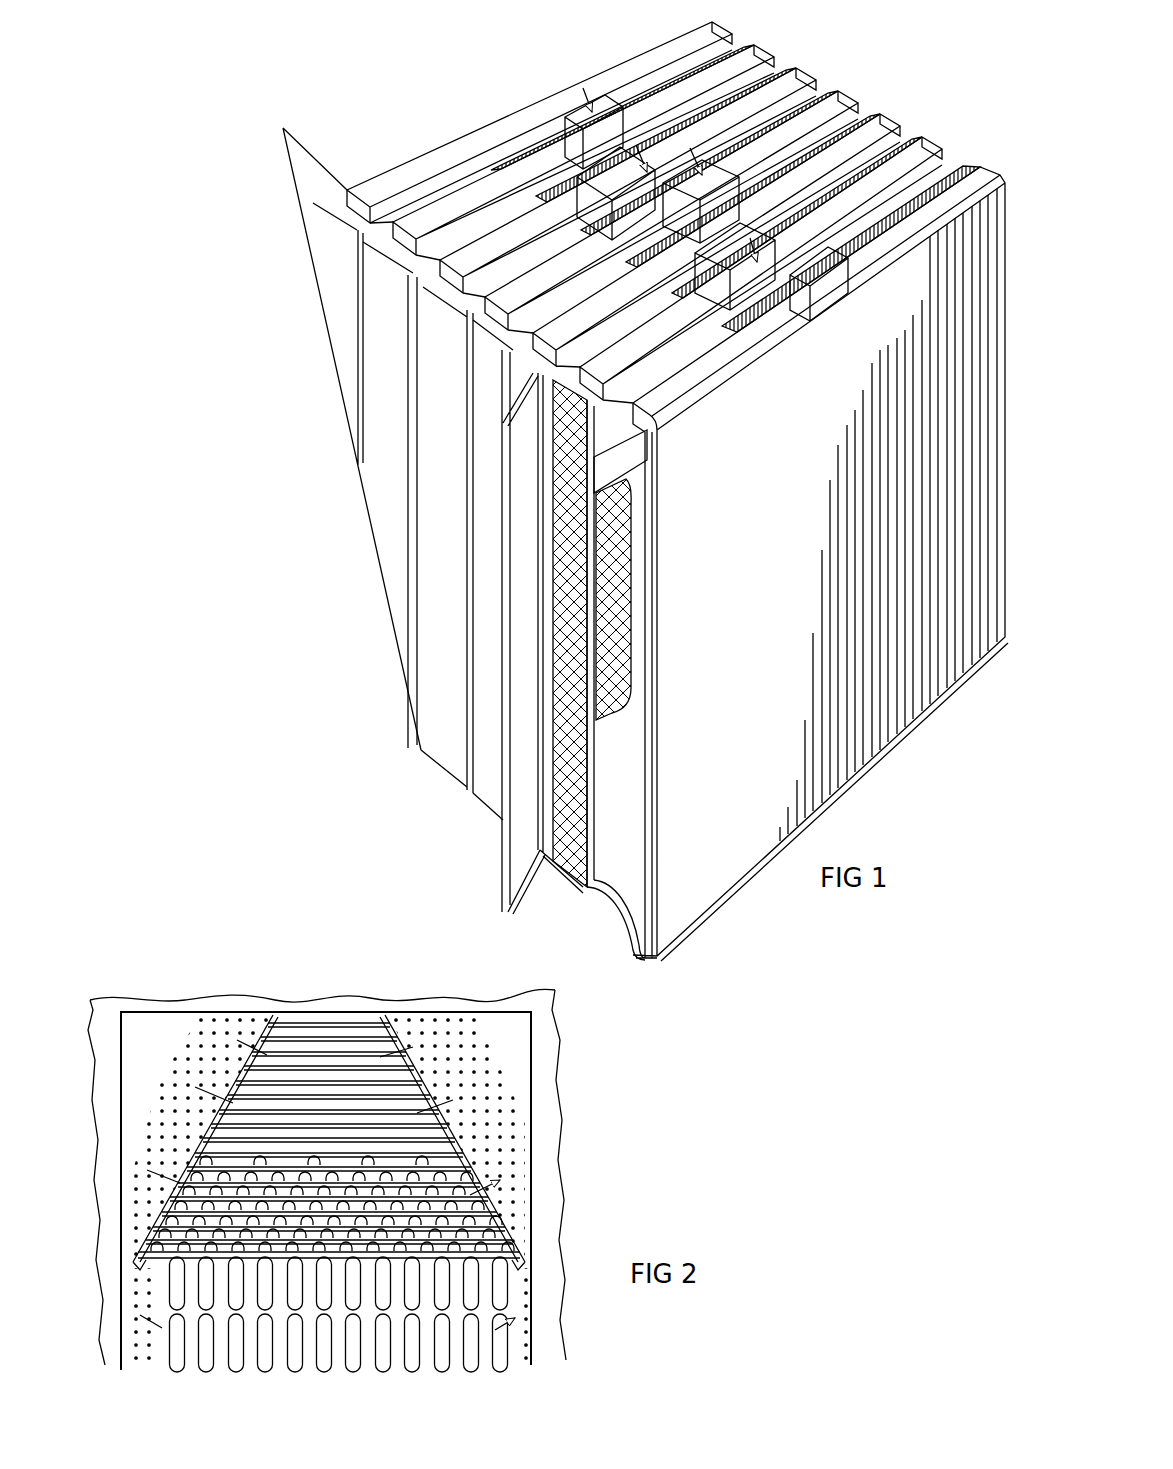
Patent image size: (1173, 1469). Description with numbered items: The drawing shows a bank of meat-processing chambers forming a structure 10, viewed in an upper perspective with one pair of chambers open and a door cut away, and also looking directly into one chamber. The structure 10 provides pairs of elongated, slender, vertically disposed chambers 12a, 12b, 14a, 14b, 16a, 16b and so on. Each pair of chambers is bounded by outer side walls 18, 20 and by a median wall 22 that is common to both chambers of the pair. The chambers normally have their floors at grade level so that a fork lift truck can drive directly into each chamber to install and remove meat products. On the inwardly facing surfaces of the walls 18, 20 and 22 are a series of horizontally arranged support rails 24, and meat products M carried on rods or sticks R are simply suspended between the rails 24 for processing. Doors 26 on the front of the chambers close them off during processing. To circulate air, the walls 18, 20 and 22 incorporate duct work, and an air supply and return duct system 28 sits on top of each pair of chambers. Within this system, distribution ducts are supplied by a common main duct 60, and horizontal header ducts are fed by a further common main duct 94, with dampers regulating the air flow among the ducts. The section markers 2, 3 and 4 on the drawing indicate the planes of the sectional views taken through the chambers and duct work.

In FIG. 1, the structure 10 is at (366, 822).
In FIG. 1, the chamber 12a is at (617, 921).
In FIG. 1, the chamber 12b is at (576, 848).
In FIG. 2, the chamber 12b is at (323, 1020).
In FIG. 1, the chamber 14a is at (489, 802).
In FIG. 1, the chamber 14b is at (447, 770).
In FIG. 1, the chamber 16a is at (380, 487).
In FIG. 1, the chamber 16b is at (340, 346).
In FIG. 1, the outer side wall 18 is at (758, 575).
In FIG. 1, the outer side wall 20 is at (556, 708).
In FIG. 2, the outer side wall 20 is at (150, 1020).
In FIG. 1, the median wall 22 is at (597, 705).
In FIG. 2, the median wall 22 is at (538, 1054).
In FIG. 2, the support rail 24 is at (172, 1150).
In FIG. 1, the door 26 is at (508, 912).
In FIG. 1, the air supply and return duct system 28 is at (836, 58).
In FIG. 1, the common main duct 60 is at (848, 262).
In FIG. 1, the common main duct 94 is at (733, 233).
In FIG. 2, the rod or stick R is at (540, 1293).
In FIG. 2, the meat product M is at (176, 1380).
In FIG. 1, the section line 2 is at (527, 420).
In FIG. 1, the section line 3 is at (600, 313).
In FIG. 1, the section line 4 is at (570, 338).